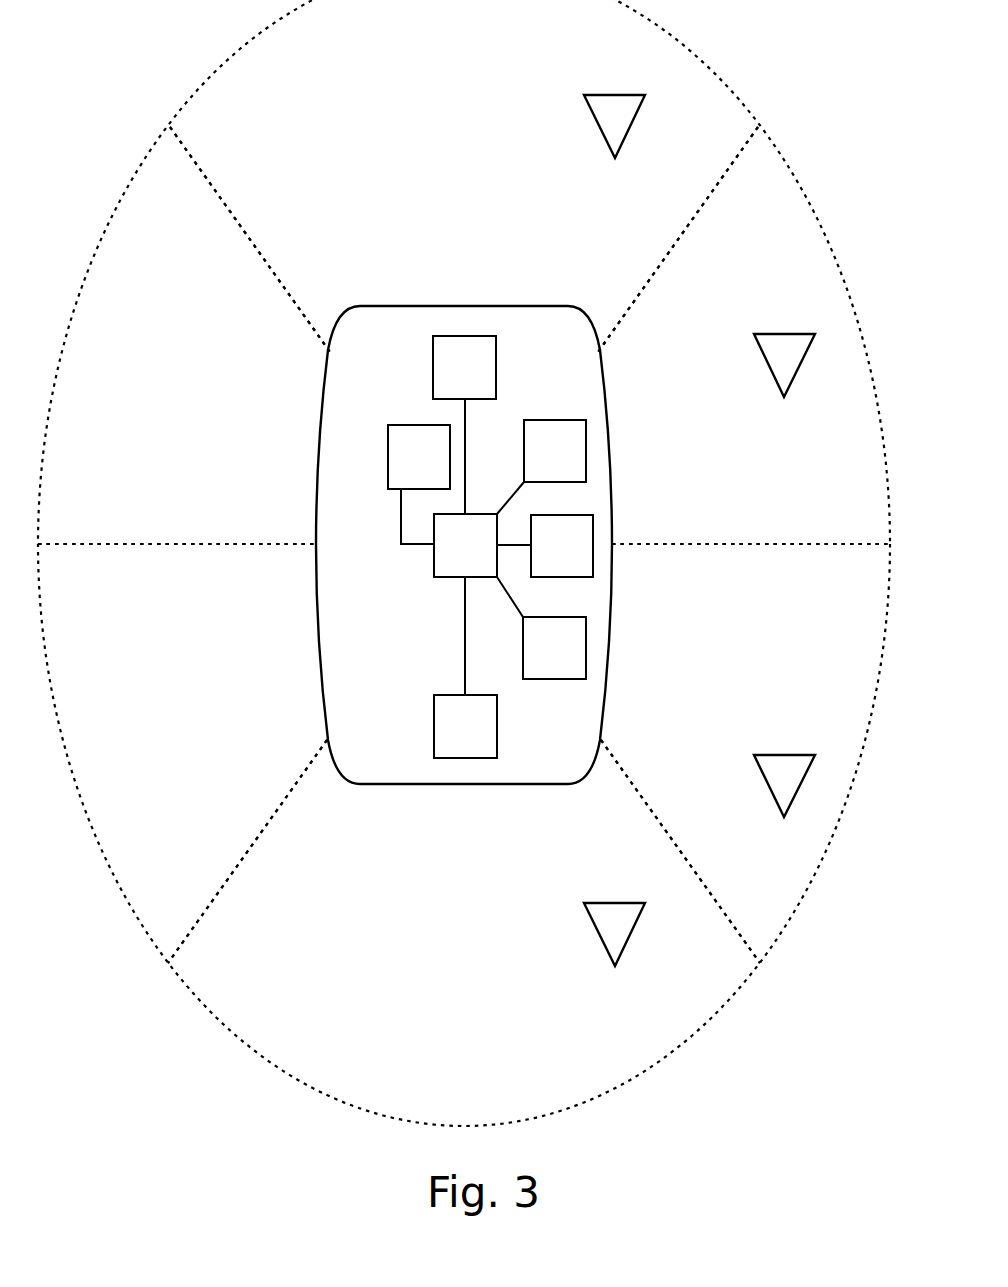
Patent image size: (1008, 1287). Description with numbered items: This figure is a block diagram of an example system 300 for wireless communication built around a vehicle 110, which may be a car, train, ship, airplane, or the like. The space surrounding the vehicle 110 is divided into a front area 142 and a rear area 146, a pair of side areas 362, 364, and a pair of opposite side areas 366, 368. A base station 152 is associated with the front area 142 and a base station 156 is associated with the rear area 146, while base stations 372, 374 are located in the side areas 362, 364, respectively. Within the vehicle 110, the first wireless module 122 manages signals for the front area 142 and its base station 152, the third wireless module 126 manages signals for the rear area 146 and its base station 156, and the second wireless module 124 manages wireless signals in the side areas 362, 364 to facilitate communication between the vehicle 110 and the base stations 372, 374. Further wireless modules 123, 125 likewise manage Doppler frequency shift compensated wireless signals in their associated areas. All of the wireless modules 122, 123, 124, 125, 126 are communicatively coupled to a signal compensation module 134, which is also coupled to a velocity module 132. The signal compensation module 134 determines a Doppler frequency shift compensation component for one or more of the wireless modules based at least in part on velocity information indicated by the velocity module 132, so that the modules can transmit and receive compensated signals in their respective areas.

The system for wireless communication 300 is at (128, 37).
The vehicle 110 is at (464, 529).
The first wireless module 122 is at (446, 379).
The wireless module 123 is at (536, 463).
The second wireless module 124 is at (543, 558).
The wireless module 125 is at (536, 660).
The third wireless module 126 is at (447, 738).
The velocity module 132 is at (400, 469).
The signal compensation module 134 is at (447, 557).
The front area 142 is at (484, 125).
The rear area 146 is at (485, 1031).
The base station 152 is at (614, 114).
The base station 156 is at (614, 922).
The side area 362 is at (813, 474).
The side area 364 is at (813, 686).
The opposite side area 366 is at (143, 679).
The opposite side area 368 is at (143, 466).
The base station 372 is at (784, 353).
The base station 374 is at (784, 773).